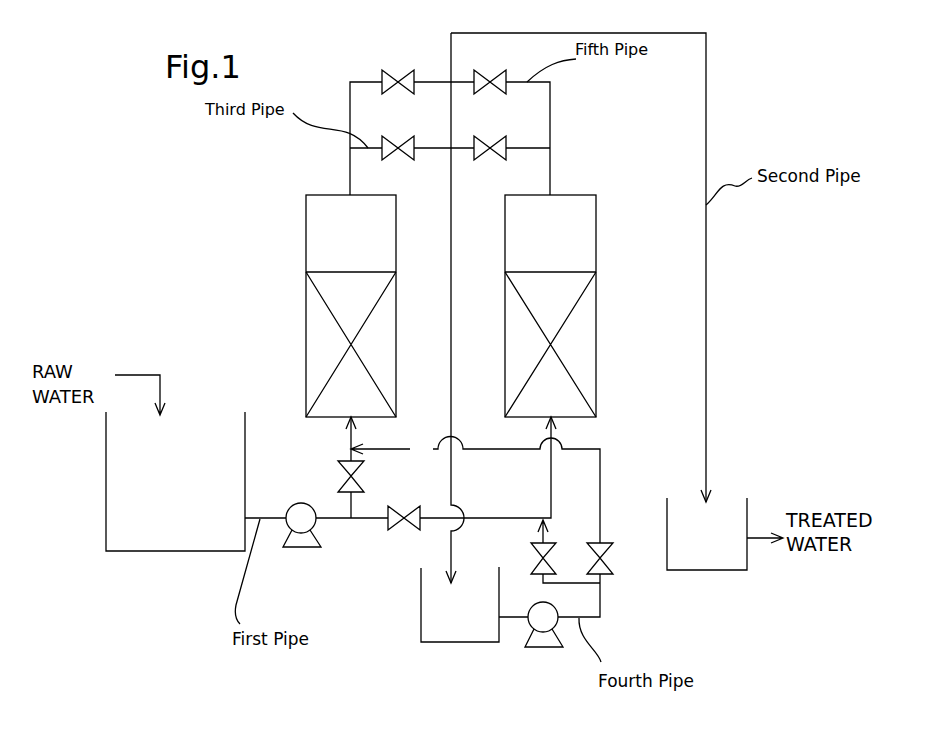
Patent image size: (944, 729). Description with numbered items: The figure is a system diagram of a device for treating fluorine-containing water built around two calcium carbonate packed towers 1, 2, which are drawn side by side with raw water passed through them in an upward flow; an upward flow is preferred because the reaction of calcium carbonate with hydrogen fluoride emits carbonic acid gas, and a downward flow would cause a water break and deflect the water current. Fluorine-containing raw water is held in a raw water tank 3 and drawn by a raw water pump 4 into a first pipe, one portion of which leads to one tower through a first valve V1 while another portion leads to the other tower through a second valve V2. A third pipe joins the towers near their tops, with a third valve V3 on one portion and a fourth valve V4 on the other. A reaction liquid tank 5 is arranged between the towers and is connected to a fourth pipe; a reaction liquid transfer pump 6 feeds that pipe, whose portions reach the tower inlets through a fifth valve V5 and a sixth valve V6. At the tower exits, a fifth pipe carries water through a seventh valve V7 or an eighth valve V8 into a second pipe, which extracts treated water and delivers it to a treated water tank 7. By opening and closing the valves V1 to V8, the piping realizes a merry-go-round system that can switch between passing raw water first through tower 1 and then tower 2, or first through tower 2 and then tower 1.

The calcium carbonate packed tower 1 is at (306, 232).
The calcium carbonate packed tower 2 is at (583, 195).
The raw water tank 3 is at (124, 552).
The raw water pump 4 is at (296, 548).
The reaction liquid tank 5 is at (424, 643).
The reaction liquid transfer pump 6 is at (553, 648).
The treated water tank 7 is at (700, 571).
The first valve V1 is at (364, 480).
The second valve V2 is at (396, 530).
The third valve V3 is at (414, 138).
The fourth valve V4 is at (506, 138).
The fifth valve V5 is at (531, 548).
The sixth valve V6 is at (613, 546).
The seventh valve V7 is at (400, 70).
The eighth valve V8 is at (508, 72).